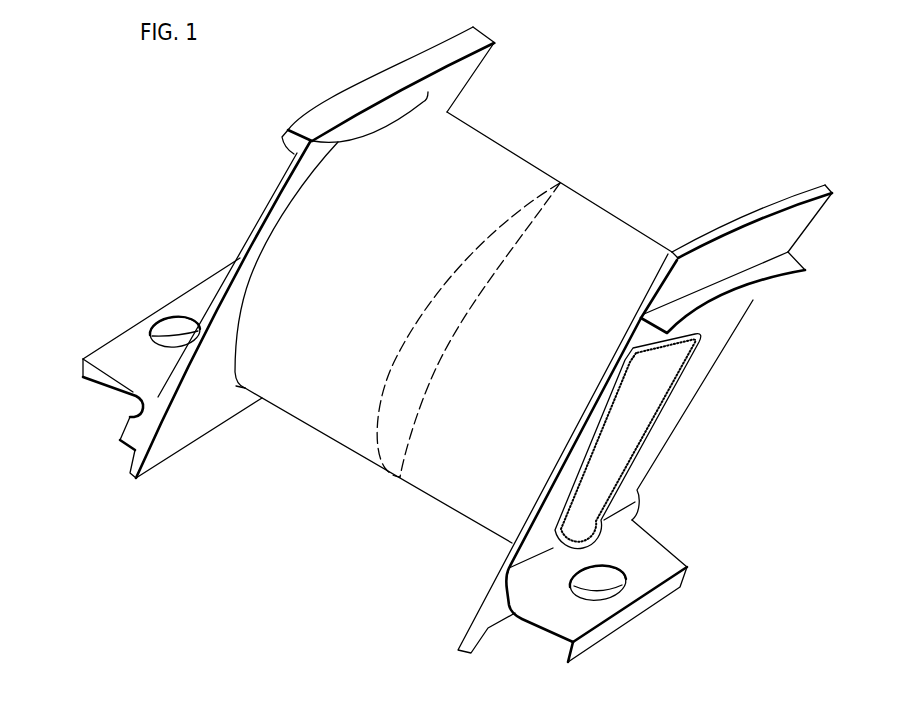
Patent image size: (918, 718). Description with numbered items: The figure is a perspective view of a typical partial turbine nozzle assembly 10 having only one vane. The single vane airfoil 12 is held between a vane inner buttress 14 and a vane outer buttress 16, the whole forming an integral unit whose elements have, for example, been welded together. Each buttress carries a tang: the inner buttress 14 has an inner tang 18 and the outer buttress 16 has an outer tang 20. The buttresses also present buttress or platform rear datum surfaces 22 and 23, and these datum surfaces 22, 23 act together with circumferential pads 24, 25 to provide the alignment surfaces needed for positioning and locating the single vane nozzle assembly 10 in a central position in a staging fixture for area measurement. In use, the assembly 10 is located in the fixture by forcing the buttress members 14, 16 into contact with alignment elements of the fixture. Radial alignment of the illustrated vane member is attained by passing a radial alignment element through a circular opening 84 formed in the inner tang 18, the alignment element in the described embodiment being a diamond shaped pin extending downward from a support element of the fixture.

The partial turbine nozzle assembly 10 is at (253, 179).
The single vane airfoil 12 is at (612, 210).
The vane inner buttress 14 is at (693, 386).
The vane outer buttress 16 is at (177, 438).
The inner tang 18 is at (655, 557).
The outer tang 20 is at (117, 352).
The platform rear datum surface 22 is at (322, 117).
The platform rear datum surface 23 is at (792, 265).
The circumferential pad 24 is at (258, 232).
The circumferential pad 25 is at (570, 438).
The circular opening 84 is at (600, 590).